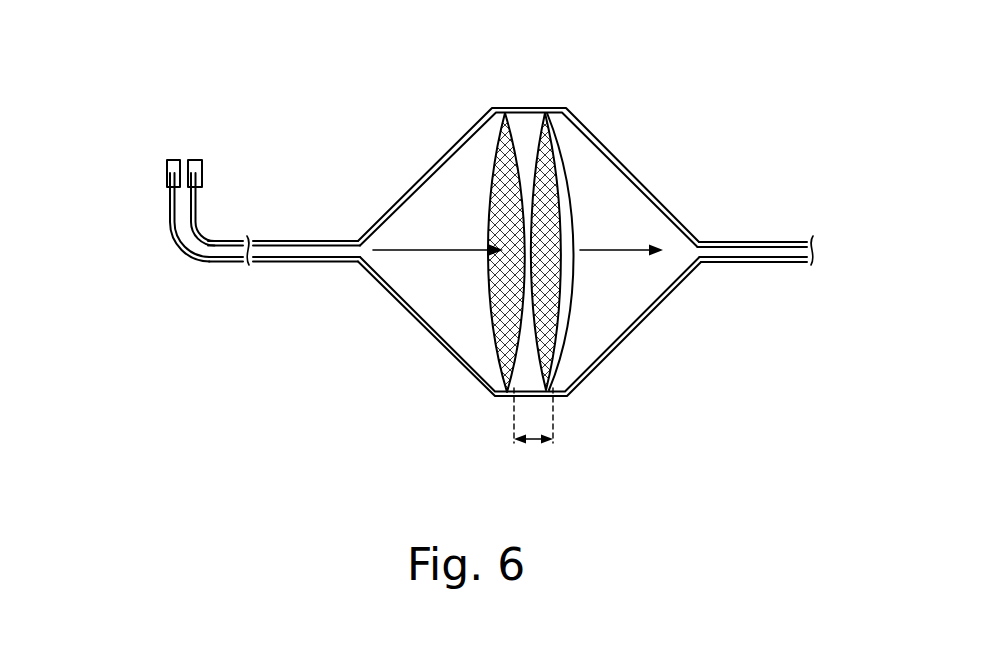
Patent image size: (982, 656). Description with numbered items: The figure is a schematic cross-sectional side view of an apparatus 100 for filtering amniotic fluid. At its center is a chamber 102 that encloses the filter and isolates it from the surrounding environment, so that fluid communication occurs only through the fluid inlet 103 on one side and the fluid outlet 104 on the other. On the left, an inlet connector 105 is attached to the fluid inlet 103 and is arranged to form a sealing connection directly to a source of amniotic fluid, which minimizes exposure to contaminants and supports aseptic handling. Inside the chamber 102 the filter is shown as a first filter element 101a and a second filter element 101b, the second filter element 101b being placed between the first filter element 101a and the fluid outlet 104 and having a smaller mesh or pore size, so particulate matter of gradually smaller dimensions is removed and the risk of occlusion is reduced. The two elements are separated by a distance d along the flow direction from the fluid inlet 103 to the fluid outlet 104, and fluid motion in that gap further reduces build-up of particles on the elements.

The apparatus for filtering amniotic fluid 100 is at (160, 52).
The first filter element 101a is at (498, 112).
The second filter element 101b is at (550, 112).
The chamber 102 is at (444, 158).
The fluid inlet 103 is at (352, 252).
The fluid outlet 104 is at (715, 253).
The inlet connector 105 is at (188, 278).
The distance d is at (533, 430).